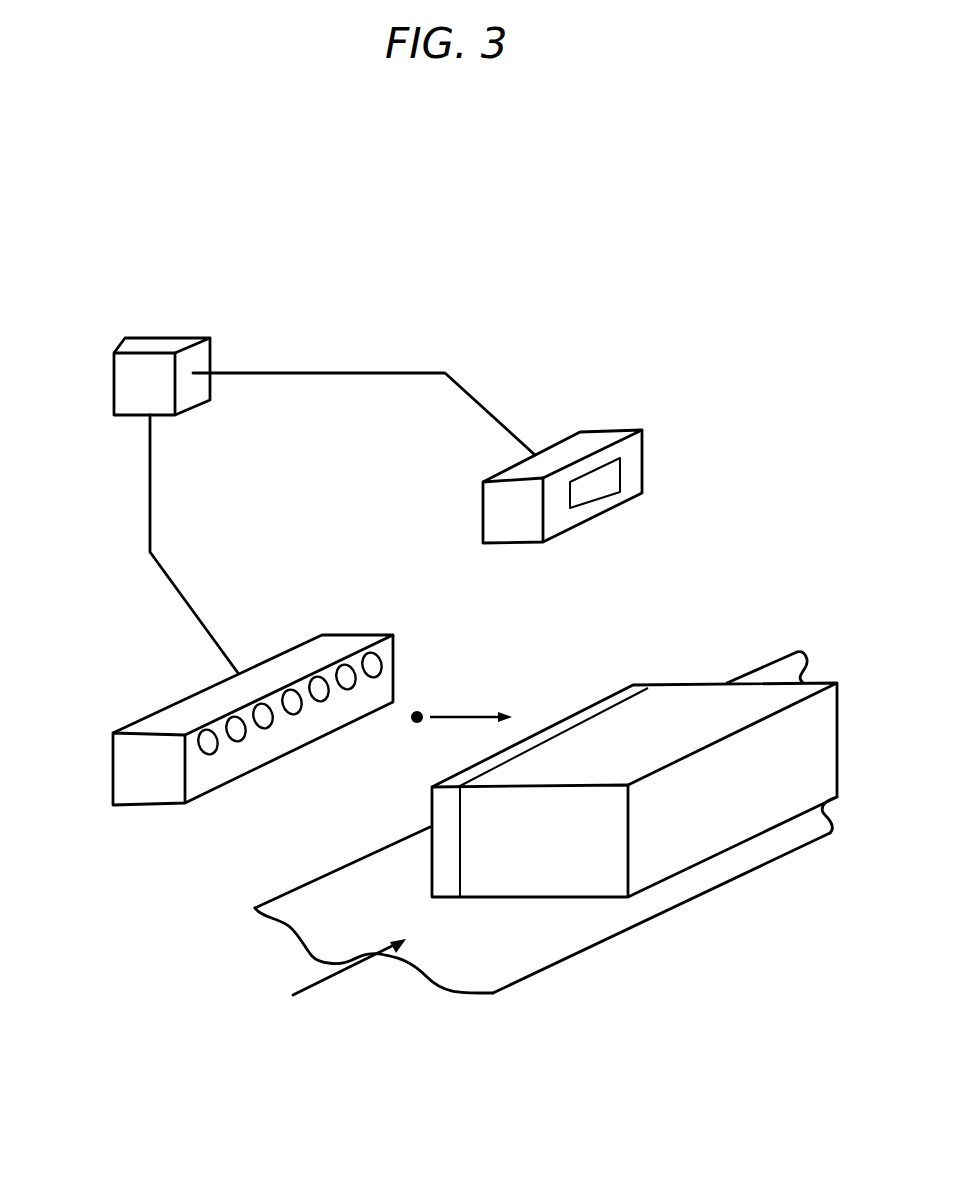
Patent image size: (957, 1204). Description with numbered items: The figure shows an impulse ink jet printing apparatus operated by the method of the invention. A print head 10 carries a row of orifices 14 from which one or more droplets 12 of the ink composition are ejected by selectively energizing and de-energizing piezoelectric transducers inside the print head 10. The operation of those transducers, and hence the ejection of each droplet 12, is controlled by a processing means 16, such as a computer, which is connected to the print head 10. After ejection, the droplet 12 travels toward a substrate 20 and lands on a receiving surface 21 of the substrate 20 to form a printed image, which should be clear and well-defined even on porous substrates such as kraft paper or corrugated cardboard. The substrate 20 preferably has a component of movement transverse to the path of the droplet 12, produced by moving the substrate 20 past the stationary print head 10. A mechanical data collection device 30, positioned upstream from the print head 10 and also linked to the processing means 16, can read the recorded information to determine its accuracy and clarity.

The print head 10 is at (140, 810).
The droplet 12 is at (420, 704).
The orifices 14 is at (263, 717).
The processing means 16 is at (158, 348).
The substrate 20 is at (520, 908).
The receiving surface 21 is at (440, 808).
The mechanical data collection device 30 is at (593, 445).